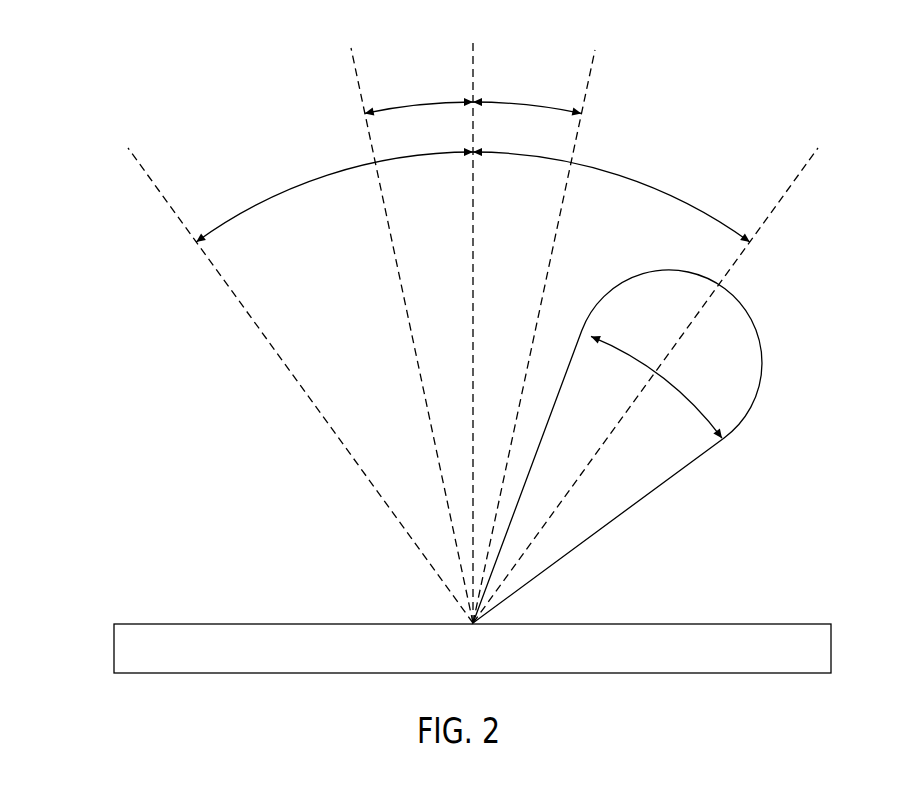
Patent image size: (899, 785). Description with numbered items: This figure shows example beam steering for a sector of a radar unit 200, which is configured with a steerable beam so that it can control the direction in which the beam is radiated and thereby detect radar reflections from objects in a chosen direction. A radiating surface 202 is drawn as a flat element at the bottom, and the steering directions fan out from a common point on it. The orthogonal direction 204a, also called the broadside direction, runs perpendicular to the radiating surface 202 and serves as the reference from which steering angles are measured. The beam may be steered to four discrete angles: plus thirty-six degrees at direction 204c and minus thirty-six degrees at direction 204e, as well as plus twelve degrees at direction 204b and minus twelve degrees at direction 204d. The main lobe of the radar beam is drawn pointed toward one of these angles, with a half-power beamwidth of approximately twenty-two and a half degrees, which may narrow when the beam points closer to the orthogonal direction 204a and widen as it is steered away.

The radar unit 200 is at (78, 88).
The antenna / ground plane substrate 202 is at (225, 623).
The orthogonal direction 204a is at (469, 55).
The plus twelve degree steering direction 204b is at (595, 75).
The plus thirty-six degree steering direction 204c is at (800, 180).
The minus twelve degree steering direction 204d is at (352, 87).
The minus thirty-six degree steering direction 204e is at (146, 181).